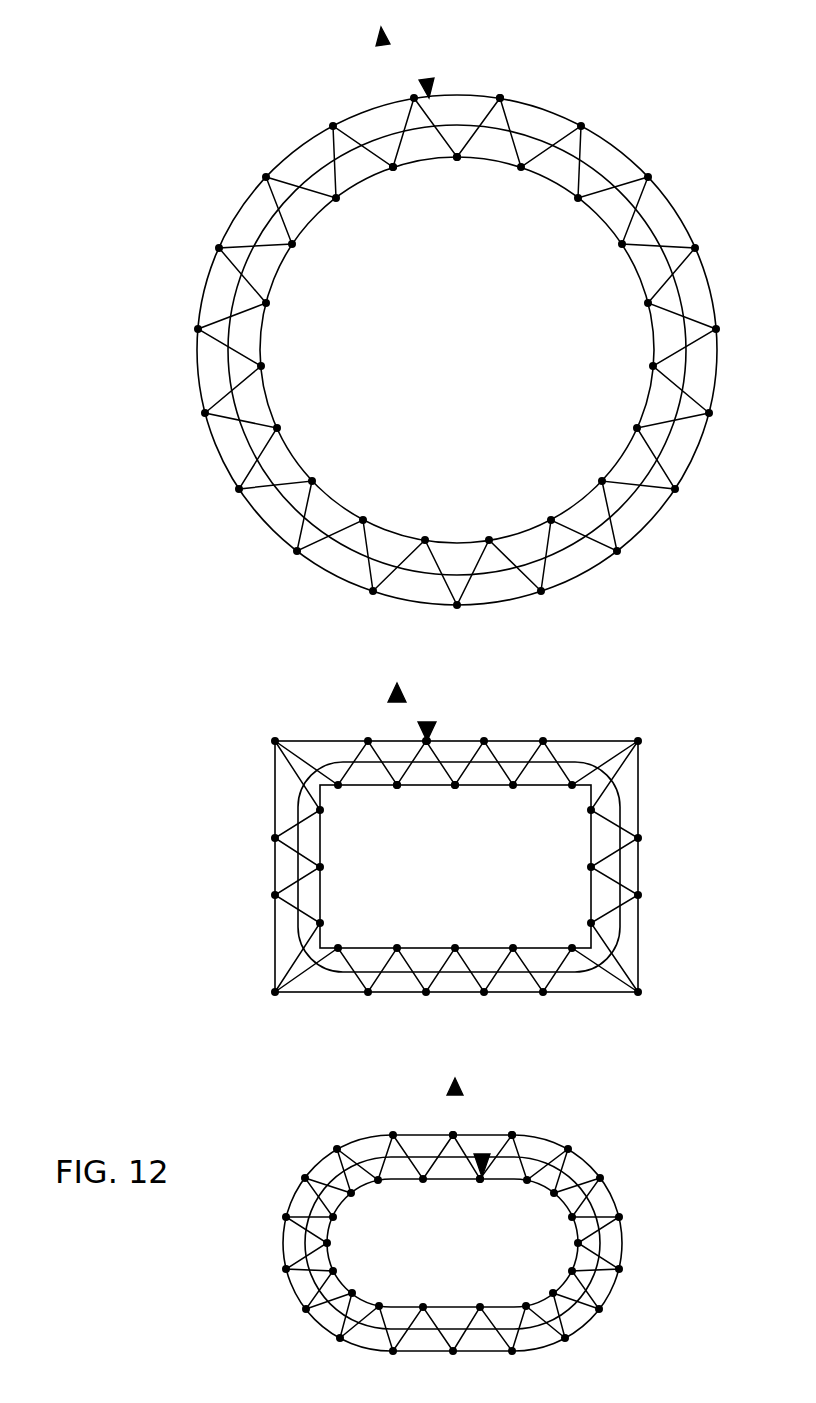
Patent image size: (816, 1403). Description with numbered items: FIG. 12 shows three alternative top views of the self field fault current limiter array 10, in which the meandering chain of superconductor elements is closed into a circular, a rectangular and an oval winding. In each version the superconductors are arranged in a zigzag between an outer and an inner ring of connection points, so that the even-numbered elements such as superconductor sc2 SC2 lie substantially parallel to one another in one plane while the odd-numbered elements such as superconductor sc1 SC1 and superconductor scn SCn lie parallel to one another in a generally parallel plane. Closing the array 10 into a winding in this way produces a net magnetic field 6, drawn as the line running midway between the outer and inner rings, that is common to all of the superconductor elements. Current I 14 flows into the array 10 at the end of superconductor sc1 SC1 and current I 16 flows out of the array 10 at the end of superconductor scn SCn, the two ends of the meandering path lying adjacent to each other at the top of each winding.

The fault current limiter array 10 is at (723, 146).
The net magnetic field 6 is at (602, 172).
The input current 14 is at (427, 82).
The output current 16 is at (394, 165).
The first superconductor element SC1 is at (485, 1173).
The second superconductor element SC2 is at (513, 1136).
The nth superconductor element SCn is at (450, 1137).